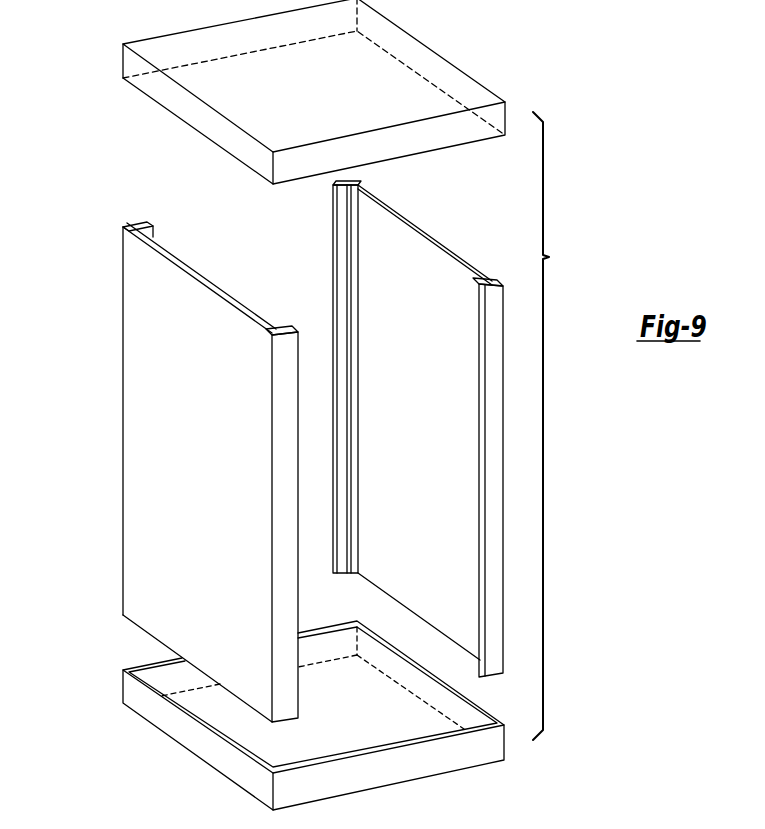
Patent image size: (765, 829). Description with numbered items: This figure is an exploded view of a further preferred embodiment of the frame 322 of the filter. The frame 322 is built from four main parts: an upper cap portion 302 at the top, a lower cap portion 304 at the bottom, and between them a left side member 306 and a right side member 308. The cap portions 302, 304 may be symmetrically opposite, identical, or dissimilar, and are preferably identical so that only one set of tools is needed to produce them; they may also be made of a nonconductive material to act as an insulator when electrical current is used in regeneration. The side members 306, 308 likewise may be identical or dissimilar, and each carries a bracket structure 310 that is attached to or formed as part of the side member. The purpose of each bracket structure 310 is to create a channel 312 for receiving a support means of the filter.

The upper cap portion 302 is at (455, 63).
The lower cap portion 304 is at (212, 743).
The left side member 306 is at (147, 418).
The right side member 308 is at (427, 268).
The bracket structure 310 is at (150, 227).
The channel 312 is at (360, 185).
The frame 322 is at (560, 426).